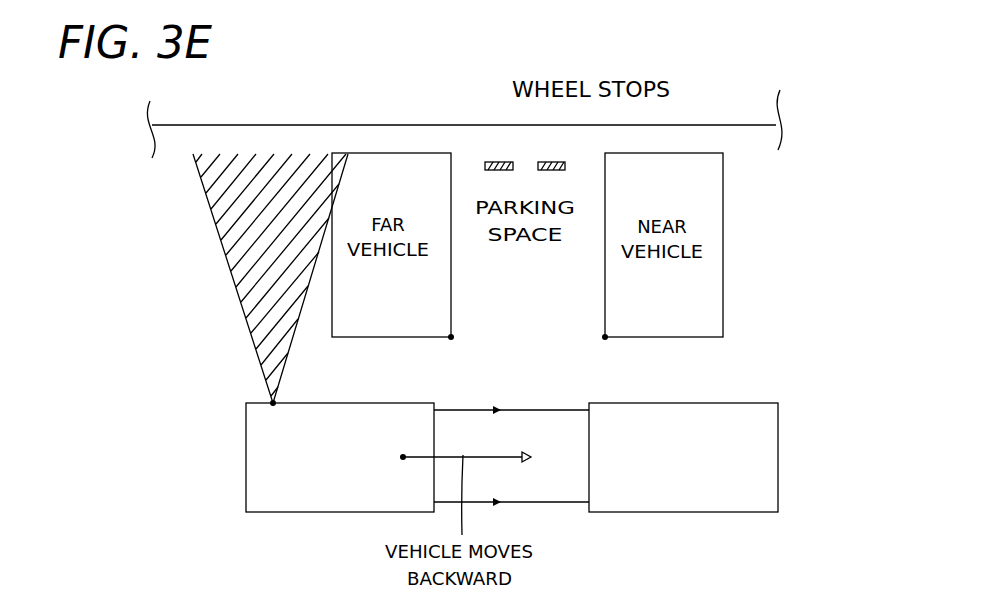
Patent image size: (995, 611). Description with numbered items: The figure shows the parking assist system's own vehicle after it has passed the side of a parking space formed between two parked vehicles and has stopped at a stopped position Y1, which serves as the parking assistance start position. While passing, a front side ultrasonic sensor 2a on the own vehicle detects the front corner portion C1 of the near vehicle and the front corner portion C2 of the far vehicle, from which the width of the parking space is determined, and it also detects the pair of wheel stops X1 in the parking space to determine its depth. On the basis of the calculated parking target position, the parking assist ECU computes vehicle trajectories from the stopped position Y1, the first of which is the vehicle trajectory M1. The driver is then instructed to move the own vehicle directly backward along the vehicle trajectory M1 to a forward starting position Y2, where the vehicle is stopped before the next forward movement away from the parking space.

The wheel stops X1 is at (540, 160).
The front side ultrasonic sensor 2a is at (276, 402).
The front corner portion of the far vehicle C2 is at (451, 340).
The front corner portion of the near vehicle C1 is at (607, 340).
The vehicle trajectory M1 is at (547, 503).
The stopped position Y1 is at (265, 512).
The forward starting position Y2 is at (618, 512).